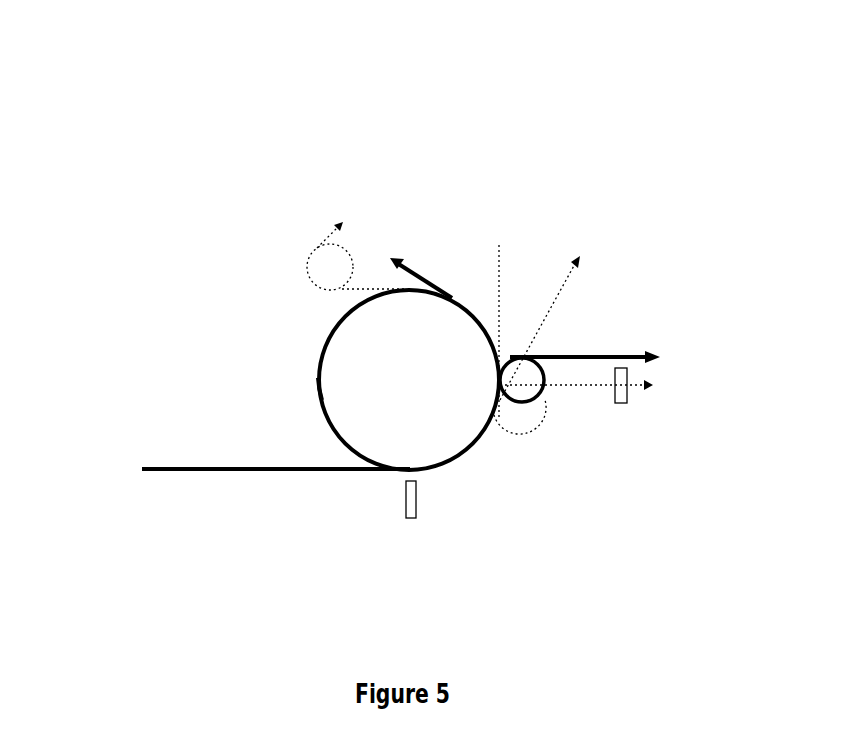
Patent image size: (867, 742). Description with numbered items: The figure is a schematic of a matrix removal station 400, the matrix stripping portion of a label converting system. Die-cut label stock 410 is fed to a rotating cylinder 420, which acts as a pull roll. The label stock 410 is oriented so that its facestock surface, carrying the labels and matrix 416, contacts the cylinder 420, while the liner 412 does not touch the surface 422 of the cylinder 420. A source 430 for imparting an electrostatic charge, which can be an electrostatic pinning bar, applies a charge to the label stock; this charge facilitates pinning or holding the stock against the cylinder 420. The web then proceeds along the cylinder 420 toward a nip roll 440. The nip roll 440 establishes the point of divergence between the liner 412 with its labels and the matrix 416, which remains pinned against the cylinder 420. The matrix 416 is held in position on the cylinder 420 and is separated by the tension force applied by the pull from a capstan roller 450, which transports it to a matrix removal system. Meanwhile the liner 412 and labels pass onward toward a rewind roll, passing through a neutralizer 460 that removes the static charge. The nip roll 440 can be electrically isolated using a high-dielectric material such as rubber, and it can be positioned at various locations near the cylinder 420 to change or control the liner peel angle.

The matrix removal station 400 is at (354, 158).
The die-cut label stock 410 is at (218, 512).
The liner 412 is at (248, 470).
The matrix 416 is at (440, 290).
The rotating cylinder 420 is at (322, 364).
The surface of cylinder 422 is at (321, 400).
The source for imparting an electrostatic charge 430 is at (411, 518).
The nip roll 440 is at (515, 402).
The capstan roller 450 is at (308, 252).
The neutralizer 460 is at (621, 403).